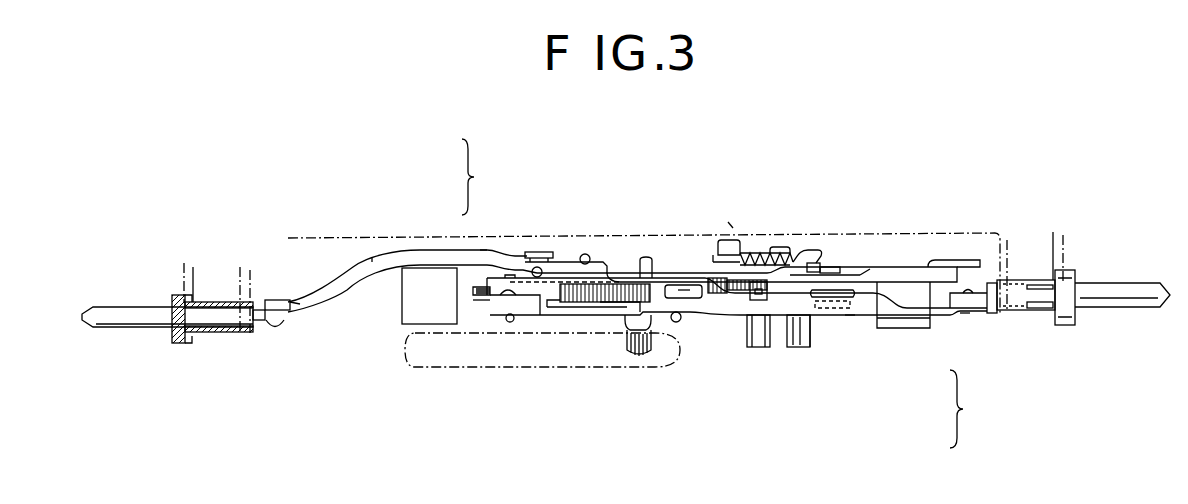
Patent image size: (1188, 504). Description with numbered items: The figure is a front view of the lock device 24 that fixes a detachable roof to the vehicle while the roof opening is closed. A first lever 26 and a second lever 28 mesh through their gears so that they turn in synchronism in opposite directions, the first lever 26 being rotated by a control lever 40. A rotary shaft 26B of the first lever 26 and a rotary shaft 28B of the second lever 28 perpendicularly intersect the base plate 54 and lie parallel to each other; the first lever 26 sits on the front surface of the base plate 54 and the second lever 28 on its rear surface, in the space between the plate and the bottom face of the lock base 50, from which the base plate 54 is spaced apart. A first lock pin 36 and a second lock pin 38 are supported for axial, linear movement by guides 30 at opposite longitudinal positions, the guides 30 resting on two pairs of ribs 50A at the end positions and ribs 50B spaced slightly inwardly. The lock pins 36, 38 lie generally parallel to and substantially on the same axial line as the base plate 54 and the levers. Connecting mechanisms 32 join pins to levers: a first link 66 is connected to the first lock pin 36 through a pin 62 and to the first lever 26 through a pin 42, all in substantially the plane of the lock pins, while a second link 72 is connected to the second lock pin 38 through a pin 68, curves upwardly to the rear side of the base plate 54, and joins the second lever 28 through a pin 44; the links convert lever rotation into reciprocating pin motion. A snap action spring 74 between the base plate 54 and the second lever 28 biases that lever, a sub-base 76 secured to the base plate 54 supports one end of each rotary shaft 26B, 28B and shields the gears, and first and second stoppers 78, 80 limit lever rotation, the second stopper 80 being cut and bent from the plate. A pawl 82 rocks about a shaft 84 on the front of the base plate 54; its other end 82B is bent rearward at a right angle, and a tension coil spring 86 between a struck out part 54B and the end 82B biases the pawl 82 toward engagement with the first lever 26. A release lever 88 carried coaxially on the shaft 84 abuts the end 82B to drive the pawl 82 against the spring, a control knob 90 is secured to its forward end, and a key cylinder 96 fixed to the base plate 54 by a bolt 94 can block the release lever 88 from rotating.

The lock device 24 is at (733, 224).
The first lever 26 is at (679, 320).
The rotary shaft of the first lever 26B is at (627, 328).
The second lever 28 is at (545, 255).
The rotary shaft of the second lever 28B is at (587, 254).
The guides 30 is at (218, 334).
The connecting mechanisms 32 is at (729, 293).
The first lock pin 36 is at (1078, 310).
The second lock pin 38 is at (135, 307).
The control lever 40 is at (455, 368).
The pin 42 is at (683, 292).
The pin 44 is at (527, 250).
The lock base 50 is at (305, 238).
The ribs 50A is at (185, 265).
The ribs 50B is at (240, 267).
The base plate 54 is at (870, 267).
The struck out part 54B is at (812, 252).
The pin 62 is at (967, 314).
The first link 66 is at (848, 315).
The pin 68 is at (290, 302).
The second link 72 is at (373, 260).
The snap action spring 74 is at (482, 300).
The sub-base 76 is at (577, 318).
The first stopper 78 is at (656, 340).
The second stopper 80 is at (647, 257).
The pawl 82 is at (716, 284).
The other end of the pawl 82B is at (722, 250).
The shaft 84 is at (737, 302).
The tension coil spring 86 is at (758, 253).
The release lever 88 is at (752, 330).
The control knob 90 is at (790, 340).
The bolt 94 is at (840, 309).
The key cylinder 96 is at (810, 340).